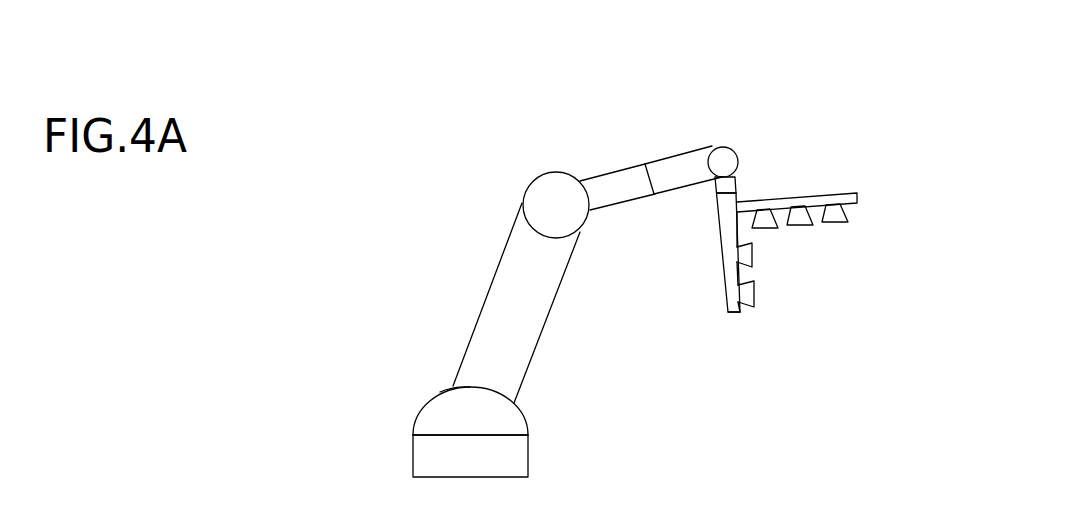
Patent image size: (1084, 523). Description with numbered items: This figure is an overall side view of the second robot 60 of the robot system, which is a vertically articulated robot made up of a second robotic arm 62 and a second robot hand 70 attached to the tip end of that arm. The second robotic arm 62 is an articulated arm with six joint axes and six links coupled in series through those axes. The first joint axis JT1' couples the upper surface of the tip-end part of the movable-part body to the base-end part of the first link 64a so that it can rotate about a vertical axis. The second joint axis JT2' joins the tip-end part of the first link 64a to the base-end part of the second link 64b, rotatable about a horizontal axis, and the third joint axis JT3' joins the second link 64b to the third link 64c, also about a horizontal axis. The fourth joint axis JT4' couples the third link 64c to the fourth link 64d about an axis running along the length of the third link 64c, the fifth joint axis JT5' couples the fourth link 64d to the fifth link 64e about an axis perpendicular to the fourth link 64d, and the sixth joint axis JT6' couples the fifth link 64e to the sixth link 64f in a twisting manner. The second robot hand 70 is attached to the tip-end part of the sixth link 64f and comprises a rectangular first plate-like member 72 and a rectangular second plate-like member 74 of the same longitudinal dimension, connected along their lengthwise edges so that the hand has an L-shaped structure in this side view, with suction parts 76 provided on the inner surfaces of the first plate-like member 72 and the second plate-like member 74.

The second robot 60 is at (325, 85).
The second robotic arm 62 is at (487, 297).
The first link 64a is at (520, 413).
The second link 64b is at (545, 333).
The third link 64c is at (613, 212).
The fourth link 64d is at (664, 199).
The fifth link 64e is at (715, 189).
The sixth link 64f is at (718, 205).
The second robot hand 70 is at (878, 140).
The first plate-like member 72 is at (820, 192).
The second plate-like member 74 is at (726, 300).
The suction parts 76 is at (766, 219).
The first joint axis JT1' is at (418, 432).
The second joint axis JT2' is at (414, 368).
The third joint axis JT3' is at (532, 176).
The fourth joint axis JT4' is at (620, 145).
The fifth joint axis JT5' is at (712, 124).
The sixth joint axis JT6' is at (778, 143).